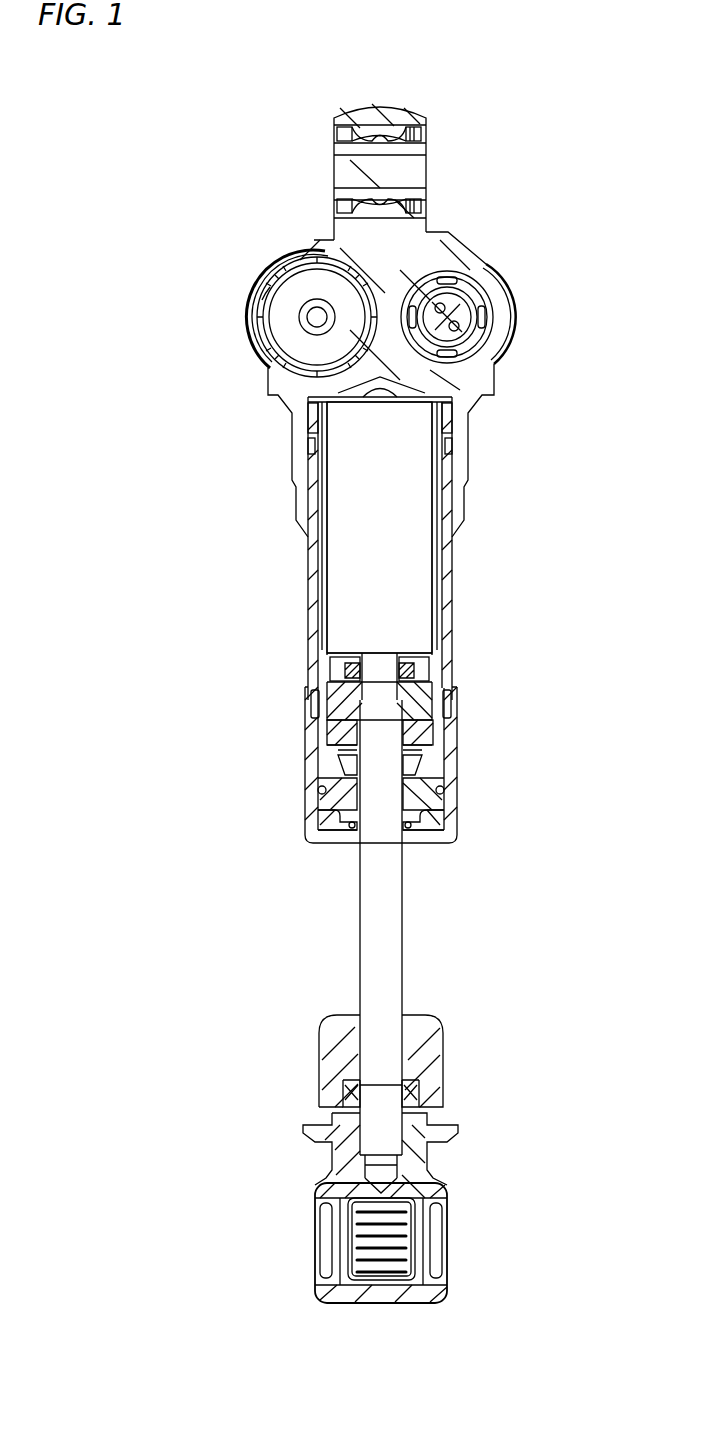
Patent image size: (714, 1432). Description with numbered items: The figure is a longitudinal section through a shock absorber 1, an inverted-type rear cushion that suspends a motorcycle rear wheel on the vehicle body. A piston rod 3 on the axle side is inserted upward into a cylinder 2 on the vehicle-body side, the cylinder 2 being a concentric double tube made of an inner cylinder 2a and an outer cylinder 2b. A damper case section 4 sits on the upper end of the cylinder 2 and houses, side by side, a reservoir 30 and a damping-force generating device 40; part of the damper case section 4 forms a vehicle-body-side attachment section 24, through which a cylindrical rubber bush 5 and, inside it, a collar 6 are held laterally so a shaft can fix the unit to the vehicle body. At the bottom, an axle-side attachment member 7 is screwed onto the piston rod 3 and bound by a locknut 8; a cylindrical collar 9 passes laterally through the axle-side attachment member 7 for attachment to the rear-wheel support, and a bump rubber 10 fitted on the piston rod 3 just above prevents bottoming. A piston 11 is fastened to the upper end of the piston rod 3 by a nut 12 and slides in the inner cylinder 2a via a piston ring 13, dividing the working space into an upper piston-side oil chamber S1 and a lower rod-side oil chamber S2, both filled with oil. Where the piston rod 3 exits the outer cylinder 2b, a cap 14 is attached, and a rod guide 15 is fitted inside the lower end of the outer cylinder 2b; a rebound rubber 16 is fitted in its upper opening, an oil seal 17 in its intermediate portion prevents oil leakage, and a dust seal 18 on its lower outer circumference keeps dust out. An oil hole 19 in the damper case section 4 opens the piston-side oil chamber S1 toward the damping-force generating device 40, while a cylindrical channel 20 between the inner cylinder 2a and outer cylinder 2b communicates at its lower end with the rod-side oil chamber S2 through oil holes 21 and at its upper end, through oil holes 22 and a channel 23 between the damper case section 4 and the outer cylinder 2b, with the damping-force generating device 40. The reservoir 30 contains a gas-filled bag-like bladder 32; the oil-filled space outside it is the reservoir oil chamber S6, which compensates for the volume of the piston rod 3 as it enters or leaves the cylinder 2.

The shock absorber 1 is at (522, 178).
The cylinder 2 is at (508, 565).
The inner cylinder 2a is at (446, 577).
The outer cylinder 2b is at (455, 603).
The piston rod 3 is at (360, 939).
The damper case section 4 is at (452, 256).
The rubber bush 5 is at (402, 124).
The collar 6 is at (334, 198).
The axle-side attachment member 7 is at (430, 1160).
The locknut 8 is at (340, 1095).
The collar 9 is at (350, 1240).
The bump rubber 10 is at (432, 1057).
The piston 11 is at (325, 689).
The nut 12 is at (420, 660).
The piston ring 13 is at (432, 666).
The cap 14 is at (329, 843).
The rod guide 15 is at (437, 786).
The rebound rubber 16 is at (430, 731).
The oil seal 17 is at (420, 762).
The dust seal 18 is at (410, 843).
The oil hole 19 is at (381, 394).
The channel 20 is at (440, 636).
The oil holes 21 is at (318, 712).
The oil holes 22 is at (452, 433).
The channel 23 is at (460, 412).
The vehicle-body-side attachment section 24 is at (426, 198).
The reservoir 30 is at (296, 246).
The bladder 32 is at (258, 259).
The damping-force generating device 40 is at (486, 266).
The piston-side oil chamber S1 is at (346, 577).
The rod-side oil chamber S2 is at (336, 748).
The reservoir oil chamber S6 is at (252, 294).